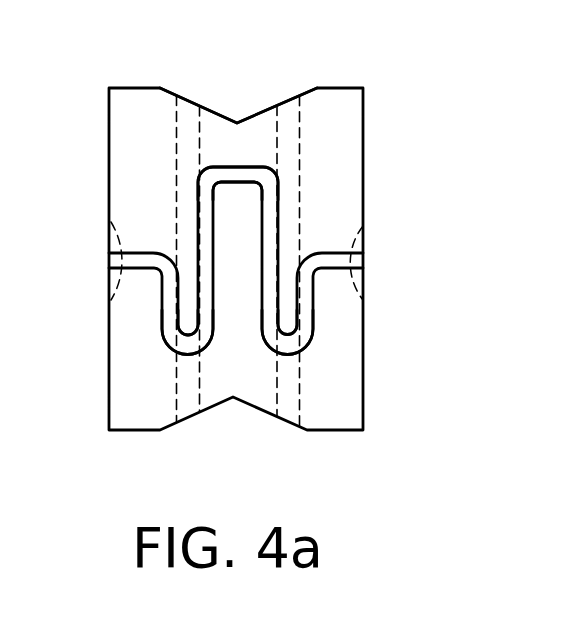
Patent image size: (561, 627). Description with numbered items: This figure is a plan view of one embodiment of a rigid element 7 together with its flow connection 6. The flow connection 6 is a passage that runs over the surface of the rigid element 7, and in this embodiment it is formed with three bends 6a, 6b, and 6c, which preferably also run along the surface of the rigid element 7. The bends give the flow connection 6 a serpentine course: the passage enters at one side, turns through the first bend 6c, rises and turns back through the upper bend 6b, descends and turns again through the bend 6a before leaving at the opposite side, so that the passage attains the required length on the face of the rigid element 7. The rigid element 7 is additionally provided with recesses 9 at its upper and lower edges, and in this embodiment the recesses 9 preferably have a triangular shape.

The flow connection 6 is at (363, 253).
The bend 6a is at (278, 355).
The bend 6b is at (223, 167).
The bend 6c is at (187, 354).
The rigid element 7 is at (340, 107).
The recess 9 is at (257, 112).